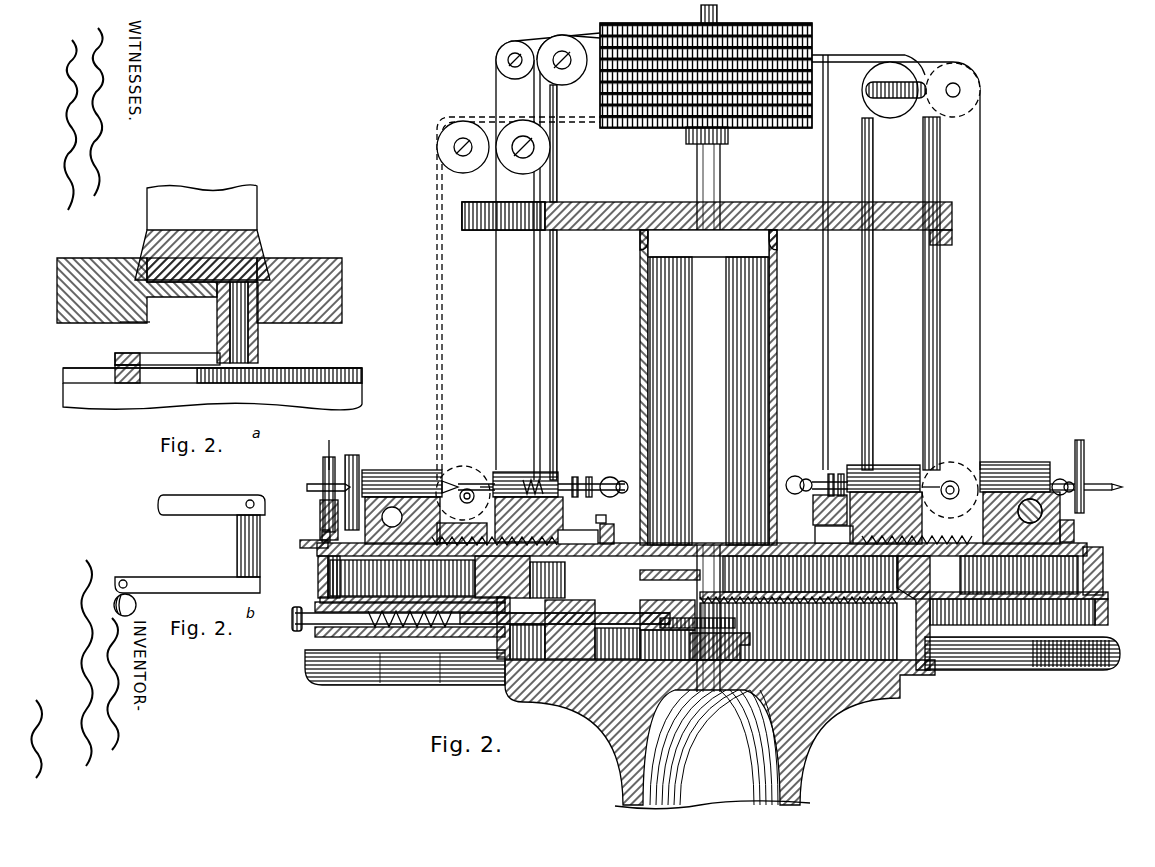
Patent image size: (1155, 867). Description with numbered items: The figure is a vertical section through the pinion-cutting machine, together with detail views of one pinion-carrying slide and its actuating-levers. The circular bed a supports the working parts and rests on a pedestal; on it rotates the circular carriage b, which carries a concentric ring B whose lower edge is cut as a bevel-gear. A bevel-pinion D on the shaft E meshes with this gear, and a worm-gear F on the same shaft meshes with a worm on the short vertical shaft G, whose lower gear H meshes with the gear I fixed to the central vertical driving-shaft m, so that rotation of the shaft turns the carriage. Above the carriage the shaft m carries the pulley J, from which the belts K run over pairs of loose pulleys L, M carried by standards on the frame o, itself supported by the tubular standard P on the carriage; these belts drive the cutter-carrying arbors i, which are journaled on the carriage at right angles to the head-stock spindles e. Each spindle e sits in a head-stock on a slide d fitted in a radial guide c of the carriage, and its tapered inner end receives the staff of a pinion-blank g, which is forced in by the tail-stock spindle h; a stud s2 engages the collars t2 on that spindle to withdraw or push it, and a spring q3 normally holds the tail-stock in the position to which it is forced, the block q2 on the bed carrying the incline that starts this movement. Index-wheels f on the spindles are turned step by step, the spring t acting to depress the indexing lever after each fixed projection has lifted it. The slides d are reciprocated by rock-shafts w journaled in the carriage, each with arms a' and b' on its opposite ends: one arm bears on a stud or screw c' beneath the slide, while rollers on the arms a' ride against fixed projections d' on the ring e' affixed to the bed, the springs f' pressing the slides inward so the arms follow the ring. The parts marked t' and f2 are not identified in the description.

In FIG. 2, the pulley J is at (812, 40).
In FIG. 2, the vertical driving-shaft m is at (722, 418).
In FIG. 2, the frame o is at (606, 196).
In FIG. 2, the tubular standard P is at (640, 328).
In FIG. 2, the belts K is at (982, 160).
In FIG. 2, the loose pulley L is at (508, 50).
In FIG. 2, the loose pulley M is at (560, 45).
In FIG. 2, the rotary carriage b is at (717, 559).
In FIG. 2A, the rotary carriage b is at (301, 273).
In FIG. 2, the slide d is at (715, 548).
In FIG. 2A, the slide d is at (213, 232).
In FIG. 2, the bed a is at (724, 630).
In FIG. 2A, the bed a is at (221, 397).
In FIG. 2, the concentric ring B is at (928, 618).
In FIG. 2, the shaft E is at (470, 655).
In FIG. 2, the bevel-pinion D is at (505, 665).
In FIG. 2, the short vertical shaft G is at (660, 630).
In FIG. 2, the gear I is at (748, 650).
In FIG. 2, the worm-gear F is at (620, 680).
In FIG. 2, the gear H is at (665, 672).
In FIG. 2, the head-stock spindle e is at (481, 549).
In FIG. 2, the arm a' is at (322, 577).
In FIG. 2A, the arm a' is at (167, 356).
In FIG. 2B, the arm a' is at (187, 583).
In FIG. 2, the rock-shaft w is at (318, 590).
In FIG. 2A, the rock-shaft w is at (258, 332).
In FIG. 2B, the rock-shaft w is at (262, 546).
In FIG. 2, the arm b' is at (315, 543).
In FIG. 2A, the arm b' is at (197, 317).
In FIG. 2B, the arm b' is at (211, 491).
In FIG. 2, the spring t is at (336, 498).
In FIG. 2, the index-wheel f is at (717, 467).
In FIG. 2, the spindle cylinder t' is at (401, 490).
In FIG. 2, the pinion-blank g is at (463, 470).
In FIG. 2, the tail-stock spindle h is at (482, 482).
In FIG. 2, the cutter-carrying arbor i is at (472, 503).
In FIG. 2, the spring q3 is at (545, 470).
In FIG. 2, the collars t2 is at (575, 475).
In FIG. 2, the stud s2 is at (612, 477).
In FIG. 2, the radial guide c is at (753, 491).
In FIG. 2A, the radial guide c is at (176, 270).
In FIG. 2, the spring f' is at (608, 522).
In FIG. 2, the pin f2 is at (613, 523).
In FIG. 2, the block q2 is at (587, 577).
In FIG. 2A, the stud or screw c' is at (124, 329).
In FIG. 2A, the fixed projections d' is at (212, 354).
In FIG. 2A, the ring e' is at (233, 372).